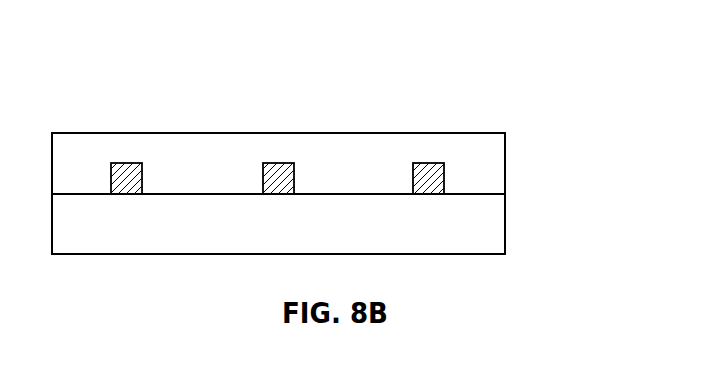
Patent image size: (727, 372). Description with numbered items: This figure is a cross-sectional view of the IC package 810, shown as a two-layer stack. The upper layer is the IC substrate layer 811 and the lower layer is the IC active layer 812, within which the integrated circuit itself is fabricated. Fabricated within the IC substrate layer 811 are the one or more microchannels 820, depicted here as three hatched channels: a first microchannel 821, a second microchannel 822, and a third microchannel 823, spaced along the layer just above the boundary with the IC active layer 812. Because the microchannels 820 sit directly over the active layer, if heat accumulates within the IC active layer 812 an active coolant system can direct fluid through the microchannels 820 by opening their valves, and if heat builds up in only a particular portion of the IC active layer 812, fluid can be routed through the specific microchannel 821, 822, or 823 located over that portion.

The IC package 810 is at (565, 153).
The IC substrate layer 811 is at (505, 158).
The IC active layer 812 is at (505, 223).
The one or more microchannels 820 is at (447, 87).
The first microchannel 821 is at (128, 163).
The second microchannel 822 is at (279, 163).
The third microchannel 823 is at (429, 163).